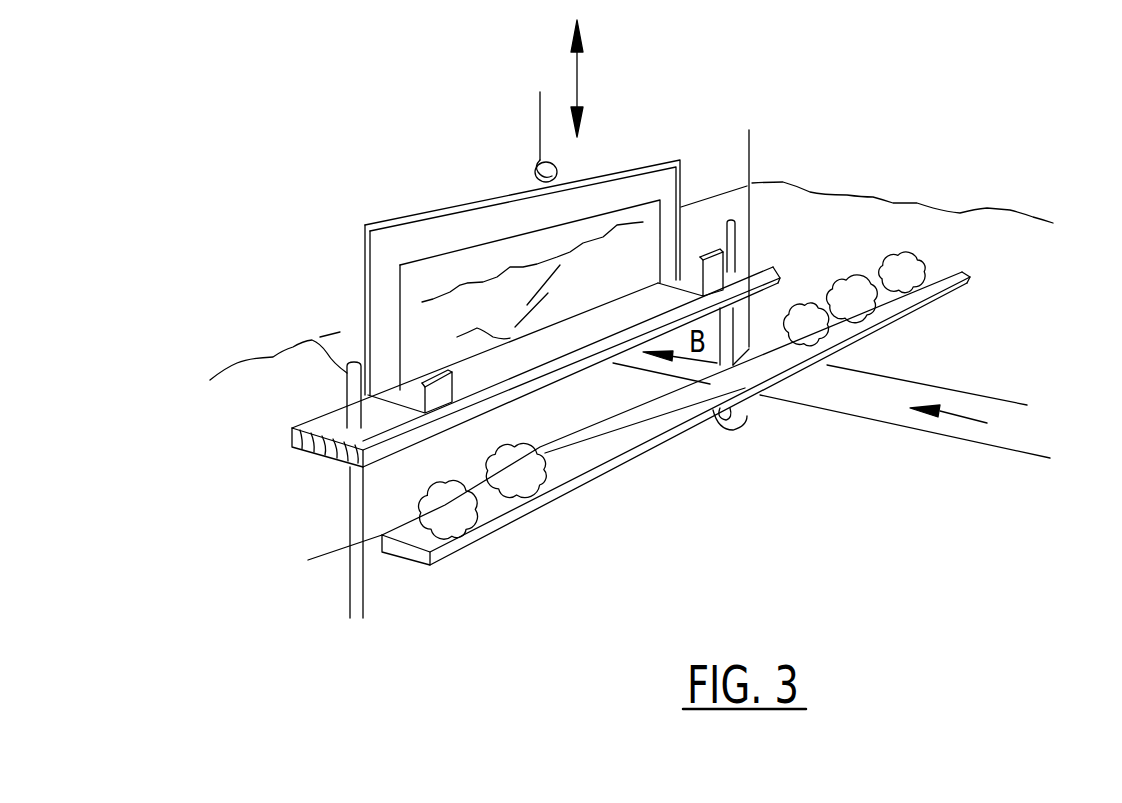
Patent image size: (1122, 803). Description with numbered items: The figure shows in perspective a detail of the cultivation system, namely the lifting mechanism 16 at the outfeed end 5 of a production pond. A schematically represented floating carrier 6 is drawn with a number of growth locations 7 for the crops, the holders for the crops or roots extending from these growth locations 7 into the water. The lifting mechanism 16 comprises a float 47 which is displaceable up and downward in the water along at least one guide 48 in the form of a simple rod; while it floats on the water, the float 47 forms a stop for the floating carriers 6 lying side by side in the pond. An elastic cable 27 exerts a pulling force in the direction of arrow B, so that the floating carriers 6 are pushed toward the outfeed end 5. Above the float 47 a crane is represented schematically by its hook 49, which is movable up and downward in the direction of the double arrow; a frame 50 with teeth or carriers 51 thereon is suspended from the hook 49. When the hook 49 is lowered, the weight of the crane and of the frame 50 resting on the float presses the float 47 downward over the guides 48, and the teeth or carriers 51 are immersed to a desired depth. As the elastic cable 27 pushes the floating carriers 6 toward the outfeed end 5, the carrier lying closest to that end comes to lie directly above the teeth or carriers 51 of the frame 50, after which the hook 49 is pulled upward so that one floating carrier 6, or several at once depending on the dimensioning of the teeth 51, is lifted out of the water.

The outfeed end 5 is at (282, 242).
The lifting mechanism 16 is at (430, 100).
The crane hook 49 is at (537, 118).
The frame 50 is at (428, 237).
The teeth or carriers 51 is at (680, 277).
The guide 48 is at (345, 377).
The float 47 is at (327, 423).
The floating carrier 6 is at (655, 438).
The growth location 7 is at (460, 512).
The elastic cable 27 is at (848, 415).